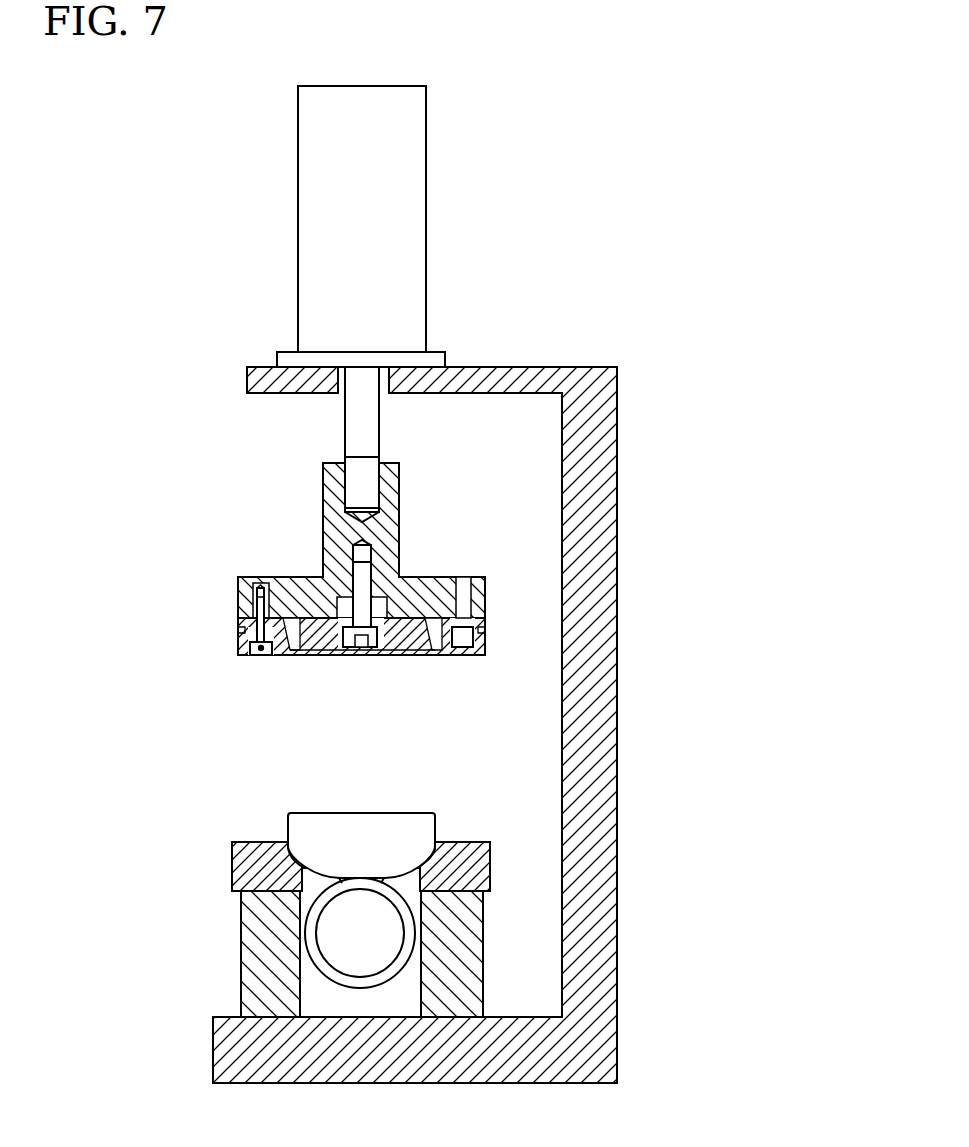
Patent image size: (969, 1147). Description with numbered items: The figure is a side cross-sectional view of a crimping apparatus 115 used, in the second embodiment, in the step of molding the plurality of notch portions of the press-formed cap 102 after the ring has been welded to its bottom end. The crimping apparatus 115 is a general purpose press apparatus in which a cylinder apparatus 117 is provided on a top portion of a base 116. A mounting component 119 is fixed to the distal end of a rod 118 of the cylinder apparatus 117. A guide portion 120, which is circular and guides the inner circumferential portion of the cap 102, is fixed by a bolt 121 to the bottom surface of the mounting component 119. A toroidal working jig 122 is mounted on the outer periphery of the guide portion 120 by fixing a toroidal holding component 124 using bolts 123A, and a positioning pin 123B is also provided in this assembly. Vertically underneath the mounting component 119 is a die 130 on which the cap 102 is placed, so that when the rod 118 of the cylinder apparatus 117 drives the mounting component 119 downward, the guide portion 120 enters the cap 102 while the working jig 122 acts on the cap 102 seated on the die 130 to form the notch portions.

The cap 102 is at (288, 827).
The crimping apparatus 115 is at (550, 232).
The base 116 is at (597, 470).
The cylinder apparatus 117 is at (382, 147).
The rod 118 is at (360, 430).
The mounting component 119 is at (323, 517).
The guide portion 120 is at (405, 654).
The bolt 121 is at (353, 650).
The working jig 122 is at (252, 605).
The bolts 123A is at (260, 655).
The positioning pin 123B is at (465, 653).
The holding component 124 is at (245, 636).
The die 130 is at (233, 890).